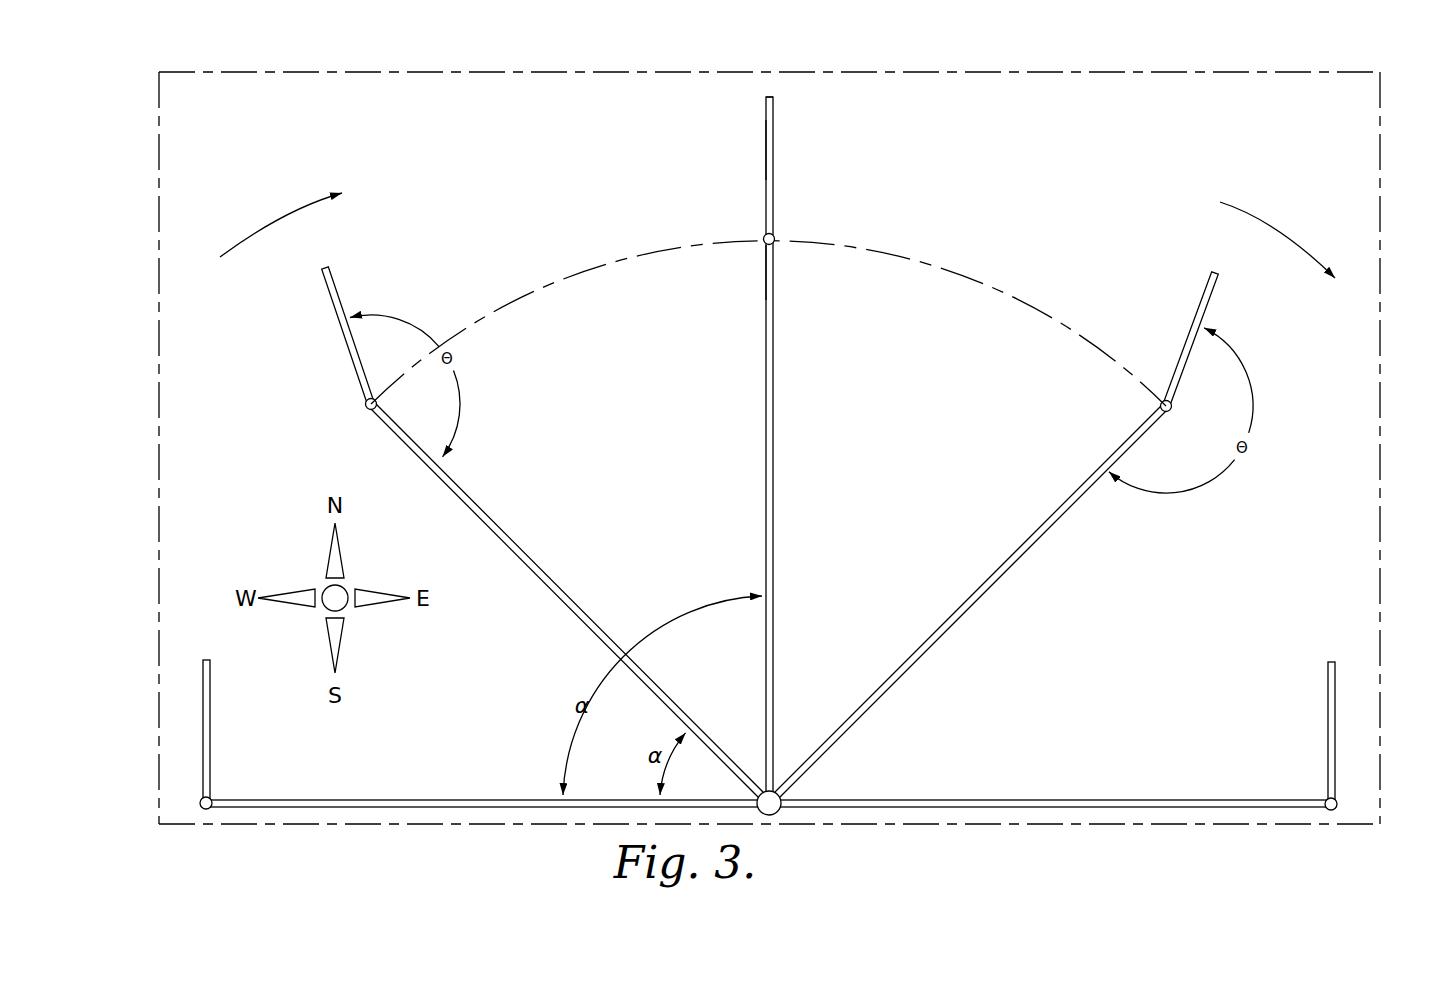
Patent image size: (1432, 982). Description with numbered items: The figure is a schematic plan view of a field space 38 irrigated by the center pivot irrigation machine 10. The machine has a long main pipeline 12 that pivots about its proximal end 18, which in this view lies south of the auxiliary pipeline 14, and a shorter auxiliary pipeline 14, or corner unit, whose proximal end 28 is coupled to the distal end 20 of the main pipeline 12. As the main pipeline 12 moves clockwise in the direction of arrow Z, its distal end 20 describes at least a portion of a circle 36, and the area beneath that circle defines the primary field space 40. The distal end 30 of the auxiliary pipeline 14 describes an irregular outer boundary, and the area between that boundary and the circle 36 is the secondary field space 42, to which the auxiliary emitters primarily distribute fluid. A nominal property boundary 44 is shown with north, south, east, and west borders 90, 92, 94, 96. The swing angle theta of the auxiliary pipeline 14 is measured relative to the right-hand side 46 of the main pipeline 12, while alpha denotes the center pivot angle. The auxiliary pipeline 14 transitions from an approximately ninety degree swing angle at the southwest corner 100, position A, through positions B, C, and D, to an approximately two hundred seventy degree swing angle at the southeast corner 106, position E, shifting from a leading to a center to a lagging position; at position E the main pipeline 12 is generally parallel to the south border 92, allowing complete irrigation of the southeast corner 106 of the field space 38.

The center pivot irrigation machine 10 is at (1002, 665).
The main pipeline 12 is at (773, 532).
The auxiliary pipeline 14 is at (773, 140).
The proximal end of the main pipeline 18 is at (787, 752).
The distal end of the main pipeline 20 is at (780, 258).
The proximal end of the auxiliary pipeline 28 is at (792, 238).
The distal end of the auxiliary pipeline 30 is at (750, 118).
The circle 36 is at (918, 258).
The field space 38 is at (392, 118).
The primary field space 40 is at (565, 490).
The secondary field space 42 is at (580, 212).
The property boundary 44 is at (1297, 72).
The right-hand side of the main pipeline 46 is at (1032, 547).
The north border 90 is at (815, 72).
The south border 92 is at (885, 824).
The east border 94 is at (1383, 505).
The west border 96 is at (158, 495).
The southwest corner 100 is at (313, 762).
The southeast corner 106 is at (1268, 732).